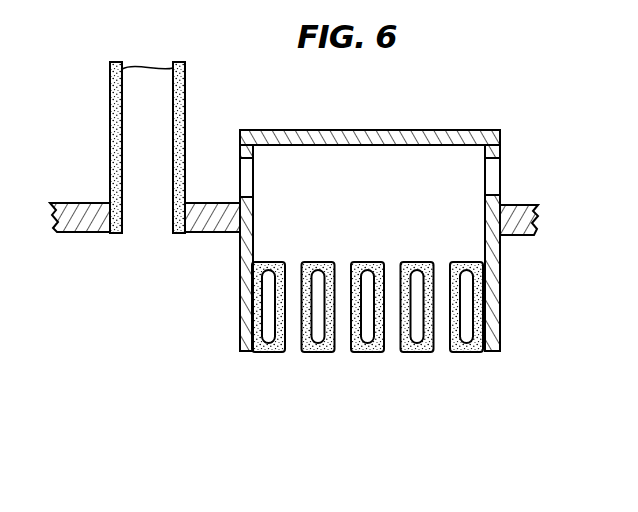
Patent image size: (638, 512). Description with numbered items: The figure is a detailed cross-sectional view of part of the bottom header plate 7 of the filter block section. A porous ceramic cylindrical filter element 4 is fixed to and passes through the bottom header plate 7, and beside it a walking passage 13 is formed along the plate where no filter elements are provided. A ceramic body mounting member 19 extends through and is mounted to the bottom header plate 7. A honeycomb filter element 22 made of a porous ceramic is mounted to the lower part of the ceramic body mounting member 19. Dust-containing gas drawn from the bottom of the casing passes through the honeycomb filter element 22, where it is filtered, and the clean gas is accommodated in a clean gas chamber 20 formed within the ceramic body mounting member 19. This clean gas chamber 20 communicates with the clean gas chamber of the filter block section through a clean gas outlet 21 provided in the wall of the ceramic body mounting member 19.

The porous ceramic cylindrical filter element 4 is at (185, 103).
The bottom header plate 7 is at (90, 233).
The walking passage 13 is at (352, 131).
The ceramic body mounting member 19 is at (502, 293).
The clean gas chamber 20 is at (455, 190).
The clean gas outlet 21 is at (502, 168).
The honeycomb filter element 22 is at (401, 355).